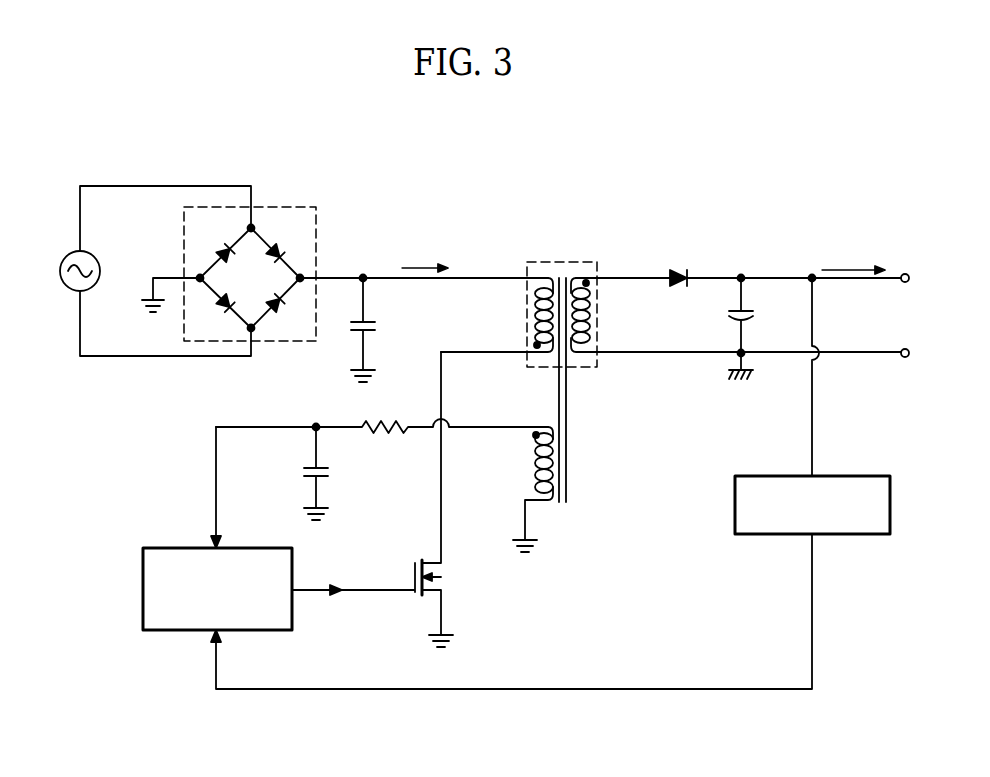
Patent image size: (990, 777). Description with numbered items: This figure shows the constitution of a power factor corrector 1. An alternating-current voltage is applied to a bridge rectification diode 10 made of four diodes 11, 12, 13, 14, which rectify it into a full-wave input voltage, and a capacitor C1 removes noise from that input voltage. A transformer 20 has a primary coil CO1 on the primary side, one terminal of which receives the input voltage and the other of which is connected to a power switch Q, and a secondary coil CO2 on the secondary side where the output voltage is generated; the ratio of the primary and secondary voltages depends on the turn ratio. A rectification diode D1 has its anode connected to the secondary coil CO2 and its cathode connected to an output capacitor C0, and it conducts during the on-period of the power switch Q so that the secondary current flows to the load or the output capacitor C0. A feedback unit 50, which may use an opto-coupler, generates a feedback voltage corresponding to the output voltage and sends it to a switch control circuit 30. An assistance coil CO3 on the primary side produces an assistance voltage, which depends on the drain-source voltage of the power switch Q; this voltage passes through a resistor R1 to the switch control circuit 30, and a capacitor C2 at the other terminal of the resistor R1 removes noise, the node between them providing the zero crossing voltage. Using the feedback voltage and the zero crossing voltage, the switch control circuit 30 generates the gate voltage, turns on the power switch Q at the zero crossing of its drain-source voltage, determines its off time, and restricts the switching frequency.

The power factor corrector 1 is at (718, 170).
The bridge rectification diode 10 is at (290, 207).
The diode 11 is at (218, 242).
The diode 12 is at (283, 242).
The diode 13 is at (218, 314).
The diode 14 is at (283, 314).
The transformer 20 is at (580, 262).
The switch control circuit 30 is at (143, 590).
The feedback unit 50 is at (891, 507).
The primary coil CO1 is at (536, 272).
The secondary coil CO2 is at (582, 352).
The assistance coil CO3 is at (548, 505).
The capacitor C1 is at (376, 330).
The capacitor C2 is at (329, 472).
The output capacitor C0 is at (754, 327).
The rectification diode D1 is at (738, 264).
The resistor R1 is at (382, 444).
The power switch Q is at (372, 499).